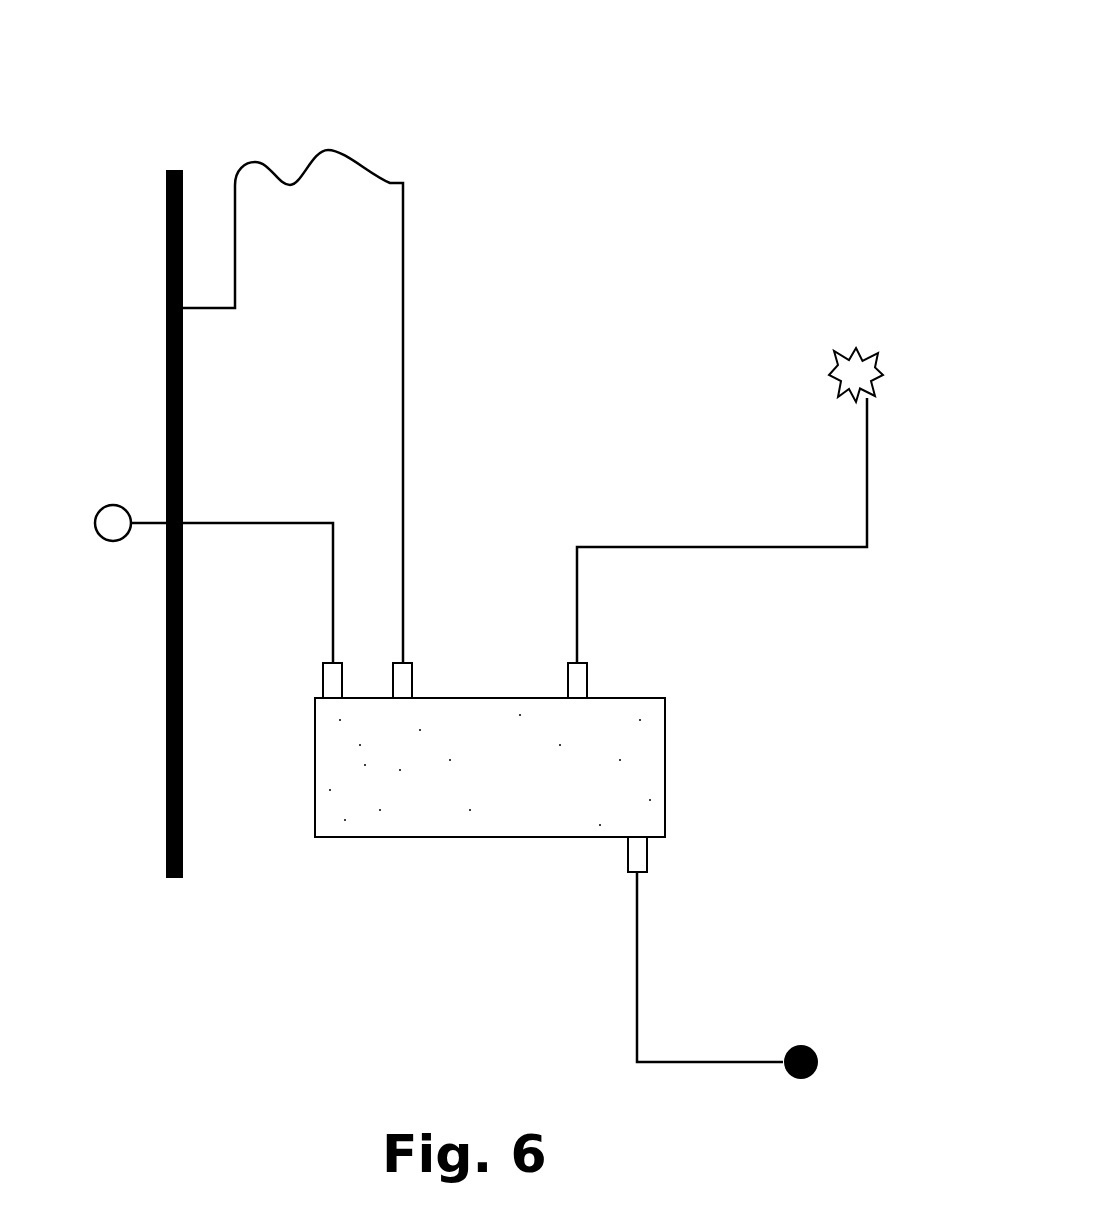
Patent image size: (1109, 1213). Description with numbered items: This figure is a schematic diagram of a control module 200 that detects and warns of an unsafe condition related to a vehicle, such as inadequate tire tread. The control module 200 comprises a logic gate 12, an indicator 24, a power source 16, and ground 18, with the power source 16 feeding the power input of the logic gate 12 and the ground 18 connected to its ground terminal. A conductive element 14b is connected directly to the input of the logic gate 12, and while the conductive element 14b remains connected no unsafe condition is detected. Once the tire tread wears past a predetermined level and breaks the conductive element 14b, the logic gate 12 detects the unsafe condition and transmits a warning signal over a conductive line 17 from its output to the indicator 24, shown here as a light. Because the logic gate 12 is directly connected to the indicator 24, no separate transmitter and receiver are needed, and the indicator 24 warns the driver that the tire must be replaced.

The control module 200 is at (740, 100).
The logic gate 12 is at (665, 767).
The conductive element 14b is at (360, 162).
The power source 16 is at (97, 510).
The conductive line 17 is at (576, 602).
The ground 18 is at (703, 1060).
The indicator 24 is at (872, 358).